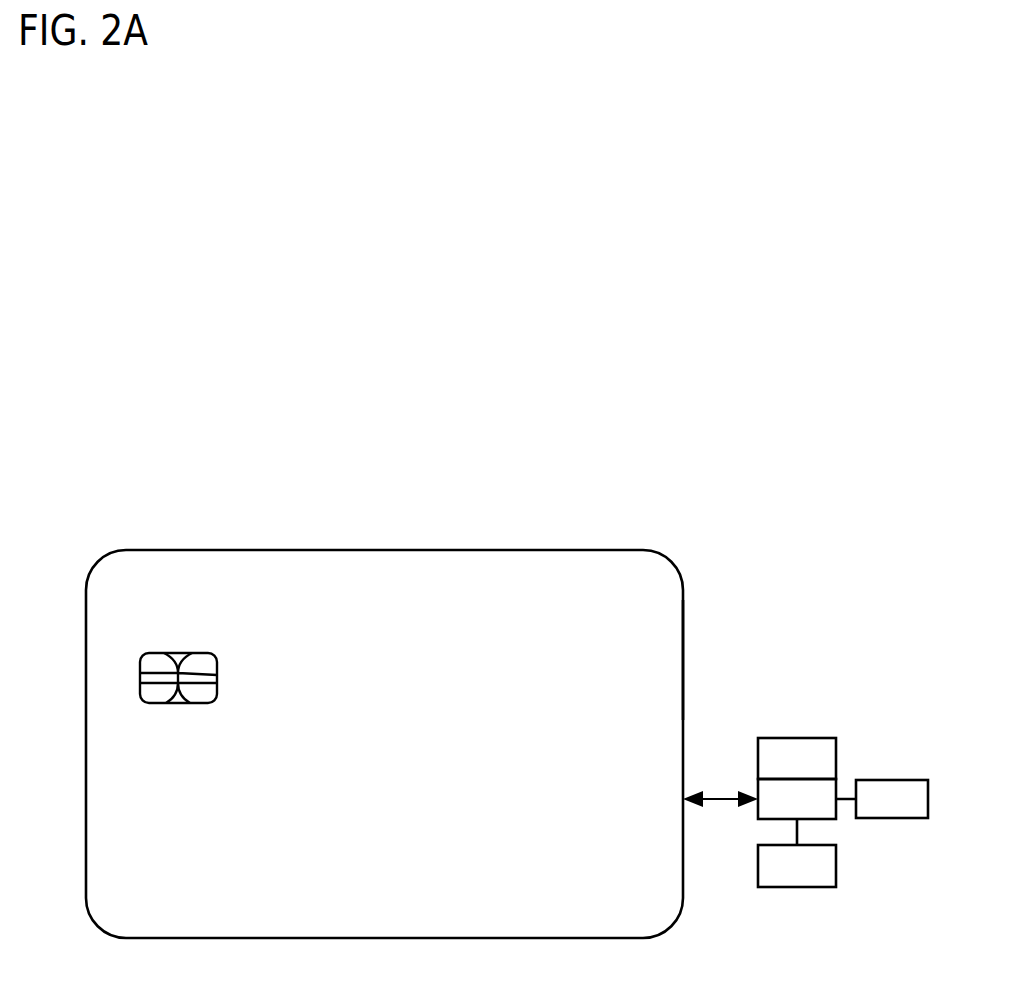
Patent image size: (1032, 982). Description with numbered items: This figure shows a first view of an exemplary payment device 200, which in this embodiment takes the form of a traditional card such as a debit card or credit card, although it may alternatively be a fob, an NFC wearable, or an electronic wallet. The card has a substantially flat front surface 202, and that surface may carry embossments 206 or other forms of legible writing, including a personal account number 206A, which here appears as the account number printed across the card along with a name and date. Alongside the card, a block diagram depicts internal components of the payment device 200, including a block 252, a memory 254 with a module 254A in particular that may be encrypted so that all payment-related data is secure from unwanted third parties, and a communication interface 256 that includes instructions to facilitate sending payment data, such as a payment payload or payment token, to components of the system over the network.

The payment device 200 is at (187, 550).
The front surface 202 is at (683, 658).
The embossments 206 is at (338, 831).
The personal account number (PAN) 206A is at (107, 790).
The processor / chip component 252 is at (797, 758).
The memory 254 is at (797, 799).
The module 254A is at (892, 799).
The communication interface 256 is at (797, 866).